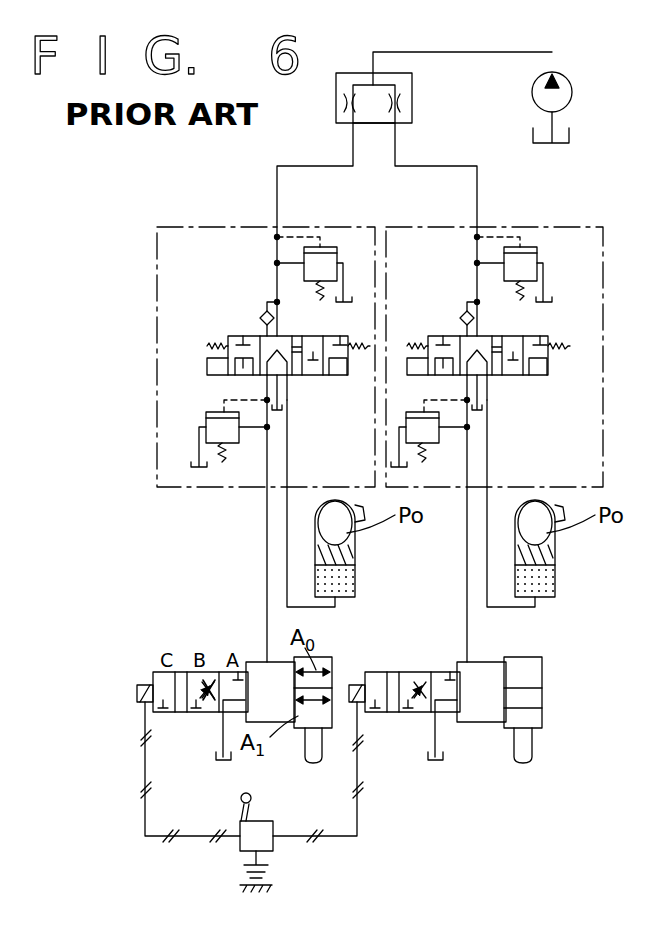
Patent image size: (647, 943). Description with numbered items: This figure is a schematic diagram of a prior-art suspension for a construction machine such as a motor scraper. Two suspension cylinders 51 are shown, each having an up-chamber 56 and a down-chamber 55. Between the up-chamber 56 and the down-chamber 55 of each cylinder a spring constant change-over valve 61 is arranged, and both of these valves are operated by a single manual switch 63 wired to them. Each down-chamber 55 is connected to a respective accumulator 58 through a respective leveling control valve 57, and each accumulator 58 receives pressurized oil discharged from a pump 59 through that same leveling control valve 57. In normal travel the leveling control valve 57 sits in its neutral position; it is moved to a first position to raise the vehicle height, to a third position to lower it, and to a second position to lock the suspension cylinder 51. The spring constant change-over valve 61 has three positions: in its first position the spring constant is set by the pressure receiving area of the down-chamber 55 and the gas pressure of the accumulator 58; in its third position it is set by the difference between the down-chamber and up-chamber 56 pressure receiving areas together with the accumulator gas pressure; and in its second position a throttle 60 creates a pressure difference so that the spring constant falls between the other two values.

The suspension cylinder 51 is at (434, 696).
The down-chamber 55 is at (334, 655).
The up-chamber 56 is at (318, 731).
The leveling control valve 57 is at (228, 334).
The accumulator 58 is at (355, 553).
The pump 59 is at (572, 91).
The throttle 60 is at (205, 687).
The spring constant change-over valve 61 is at (150, 676).
The manual switch 63 is at (240, 796).